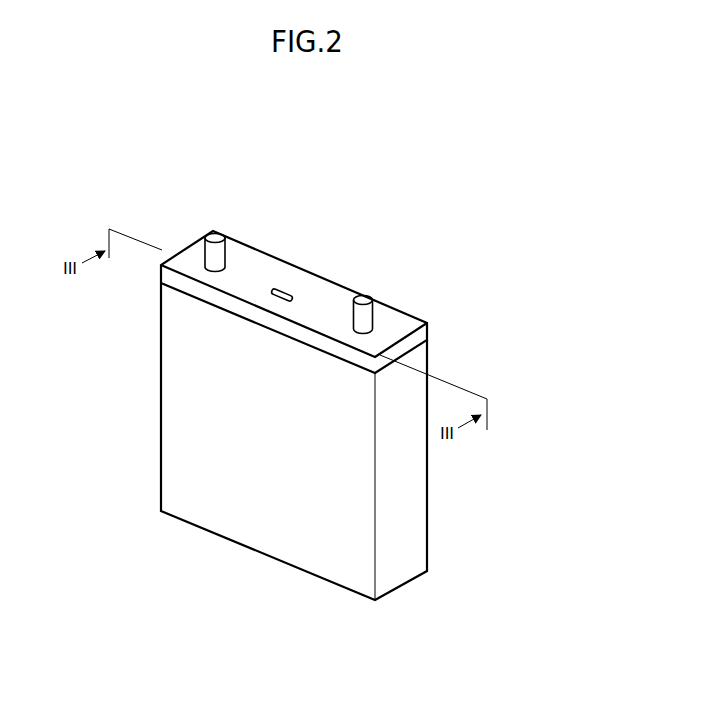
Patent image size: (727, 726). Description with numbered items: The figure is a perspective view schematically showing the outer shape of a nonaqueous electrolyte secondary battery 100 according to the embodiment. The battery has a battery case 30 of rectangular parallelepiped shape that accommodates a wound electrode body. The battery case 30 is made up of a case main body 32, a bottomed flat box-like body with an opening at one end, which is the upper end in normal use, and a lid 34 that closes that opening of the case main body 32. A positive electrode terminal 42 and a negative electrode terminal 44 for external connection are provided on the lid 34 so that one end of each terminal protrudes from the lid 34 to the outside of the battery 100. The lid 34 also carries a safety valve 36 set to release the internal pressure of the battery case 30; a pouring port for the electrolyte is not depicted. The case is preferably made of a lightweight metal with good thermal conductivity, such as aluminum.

The battery 100 is at (547, 195).
The battery case 30 is at (266, 527).
The case main body 32 is at (418, 540).
The lid 34 is at (428, 335).
The safety valve 36 is at (281, 290).
The positive electrode terminal 42 is at (216, 233).
The negative electrode terminal 44 is at (365, 296).